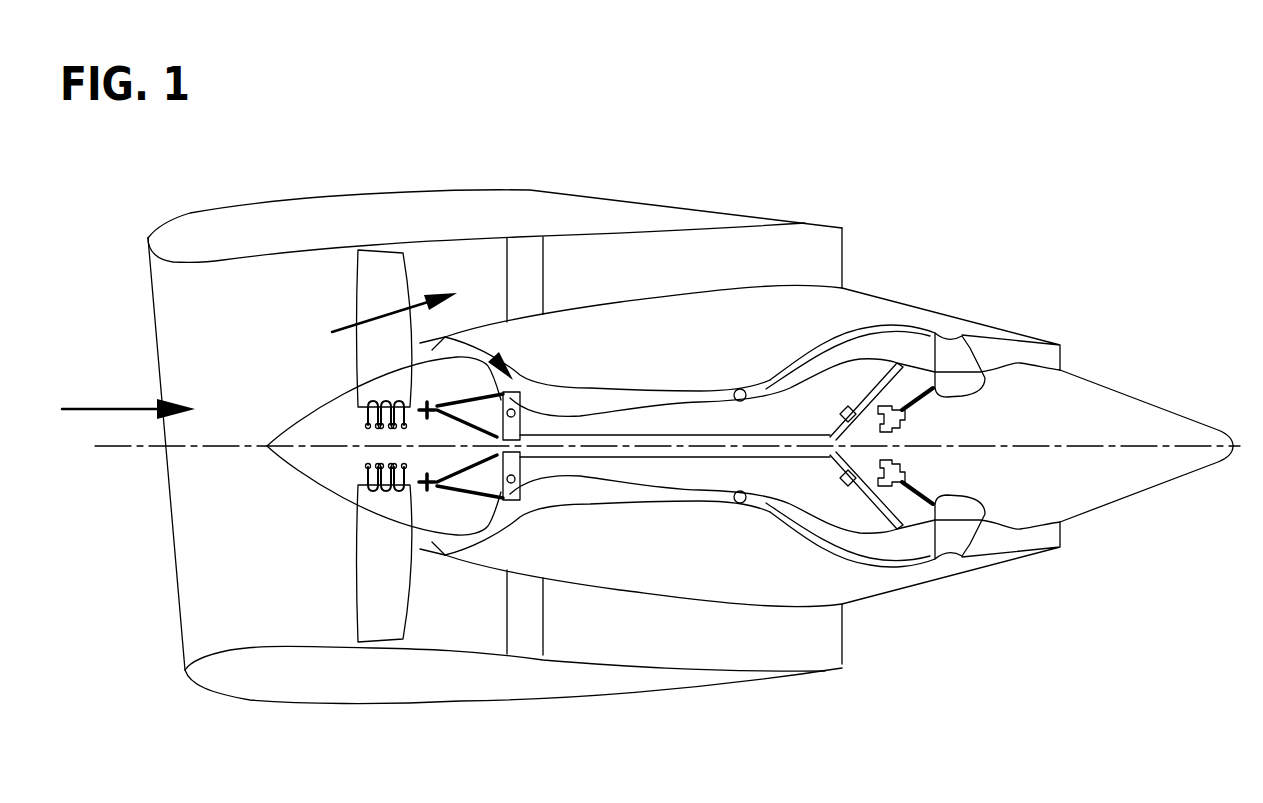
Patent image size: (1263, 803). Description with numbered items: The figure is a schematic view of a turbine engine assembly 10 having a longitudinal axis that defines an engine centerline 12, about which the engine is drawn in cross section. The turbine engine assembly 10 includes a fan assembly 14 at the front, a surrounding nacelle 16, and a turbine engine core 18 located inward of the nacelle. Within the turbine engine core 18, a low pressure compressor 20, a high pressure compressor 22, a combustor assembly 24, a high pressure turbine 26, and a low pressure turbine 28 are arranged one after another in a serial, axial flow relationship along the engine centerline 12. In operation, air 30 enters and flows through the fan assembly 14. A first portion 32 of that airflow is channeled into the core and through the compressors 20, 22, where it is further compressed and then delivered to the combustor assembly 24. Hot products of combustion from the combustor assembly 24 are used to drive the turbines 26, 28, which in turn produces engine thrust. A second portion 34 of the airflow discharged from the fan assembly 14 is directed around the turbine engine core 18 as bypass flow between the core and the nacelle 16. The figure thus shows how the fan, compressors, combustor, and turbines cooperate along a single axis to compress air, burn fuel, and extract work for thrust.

The turbine engine assembly 10 is at (983, 143).
The engine centerline 12 is at (122, 447).
The fan assembly 14 is at (292, 310).
The nacelle 16 is at (582, 217).
The turbine engine core 18 is at (686, 296).
The low pressure compressor 20 is at (612, 398).
The high pressure compressor 22 is at (680, 398).
The combustor assembly 24 is at (747, 497).
The high pressure turbine 26 is at (792, 383).
The low pressure turbine 28 is at (908, 343).
The air 30 is at (124, 400).
The first portion of the airflow 32 is at (494, 357).
The second portion of the airflow 34 is at (433, 277).